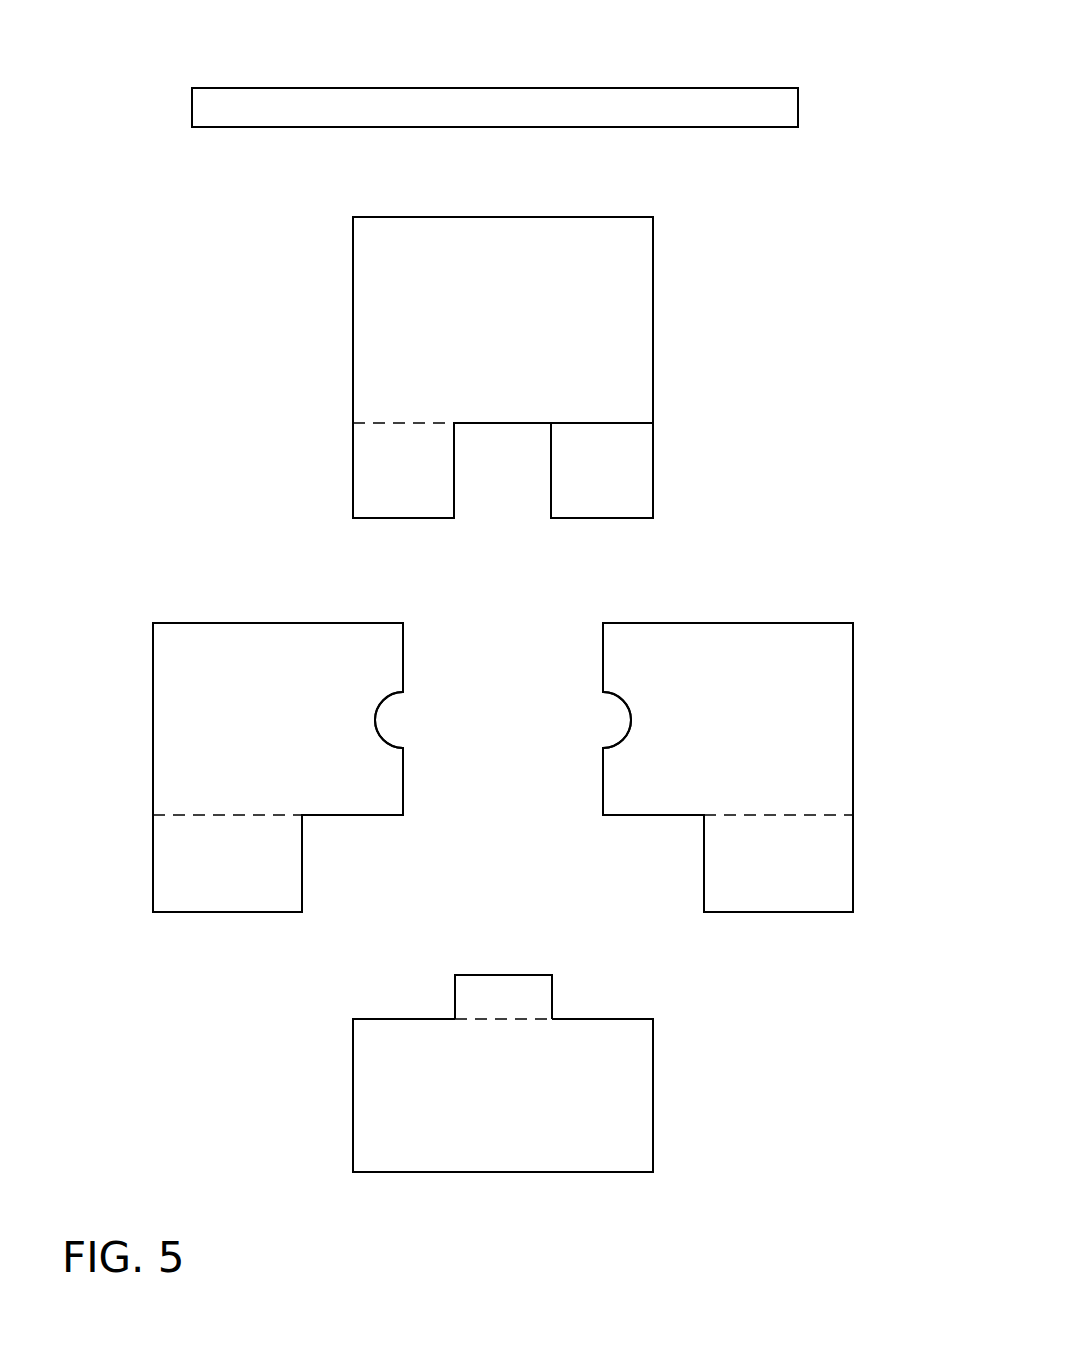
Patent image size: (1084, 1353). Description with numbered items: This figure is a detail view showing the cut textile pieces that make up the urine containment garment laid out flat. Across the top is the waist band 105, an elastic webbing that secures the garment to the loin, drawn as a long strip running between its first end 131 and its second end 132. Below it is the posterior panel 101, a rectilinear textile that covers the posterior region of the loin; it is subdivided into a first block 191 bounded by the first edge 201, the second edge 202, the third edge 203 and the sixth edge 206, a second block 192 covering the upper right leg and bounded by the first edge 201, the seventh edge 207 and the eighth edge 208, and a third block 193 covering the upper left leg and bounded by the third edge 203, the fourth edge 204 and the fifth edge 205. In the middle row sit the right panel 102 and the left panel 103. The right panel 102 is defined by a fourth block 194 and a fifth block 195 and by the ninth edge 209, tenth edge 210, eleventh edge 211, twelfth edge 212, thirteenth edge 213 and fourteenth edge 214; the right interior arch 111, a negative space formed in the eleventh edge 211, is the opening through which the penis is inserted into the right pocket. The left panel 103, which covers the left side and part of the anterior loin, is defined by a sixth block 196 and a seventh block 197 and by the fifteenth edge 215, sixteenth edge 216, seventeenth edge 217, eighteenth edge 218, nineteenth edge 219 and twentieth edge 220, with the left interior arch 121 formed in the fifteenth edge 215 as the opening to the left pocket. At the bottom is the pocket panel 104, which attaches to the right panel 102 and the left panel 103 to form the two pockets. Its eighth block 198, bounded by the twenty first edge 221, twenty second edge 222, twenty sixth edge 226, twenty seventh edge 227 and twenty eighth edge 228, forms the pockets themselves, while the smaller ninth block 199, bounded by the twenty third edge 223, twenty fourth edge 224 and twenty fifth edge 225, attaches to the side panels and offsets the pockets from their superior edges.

The waist band 105 is at (736, 88).
The first end 131 is at (192, 104).
The second end 132 is at (798, 103).
The posterior panel 101 is at (653, 222).
The second edge 202 is at (480, 217).
The first block 191 is at (360, 233).
The first edge 201 is at (353, 355).
The third edge 203 is at (653, 367).
The sixth edge 206 is at (515, 423).
The second block 192 is at (353, 492).
The third block 193 is at (633, 468).
The eighth edge 208 is at (395, 518).
The seventh edge 207 is at (454, 488).
The fifth edge 205 is at (551, 488).
The fourth edge 204 is at (612, 518).
The right panel 102 is at (153, 623).
The tenth edge 210 is at (213, 623).
The fourth block 194 is at (178, 655).
The ninth edge 209 is at (153, 716).
The right interior arch 111 is at (378, 717).
The eleventh edge 211 is at (403, 645).
The twelfth edge 212 is at (348, 815).
The thirteenth edge 213 is at (302, 875).
The fifth block 195 is at (170, 872).
The fourteenth edge 214 is at (212, 912).
The left panel 103 is at (853, 623).
The sixteenth edge 216 is at (752, 623).
The fifteenth edge 215 is at (603, 660).
The left interior arch 121 is at (630, 717).
The sixth block 196 is at (830, 695).
The seventeenth edge 217 is at (853, 770).
The twentieth edge 220 is at (650, 815).
The nineteenth edge 219 is at (704, 872).
The seventh block 197 is at (853, 870).
The eighteenth edge 218 is at (780, 912).
The pocket panel 104 is at (653, 1095).
The ninth block 199 is at (532, 988).
The twenty fourth edge 224 is at (490, 975).
The twenty third edge 223 is at (455, 993).
The twenty fifth edge 225 is at (552, 990).
The twenty second edge 222 is at (400, 1020).
The twenty sixth edge 226 is at (595, 1020).
The twenty seventh edge 227 is at (653, 1045).
The twenty first edge 221 is at (353, 1075).
The eighth block 198 is at (635, 1142).
The twenty eighth edge 228 is at (485, 1172).